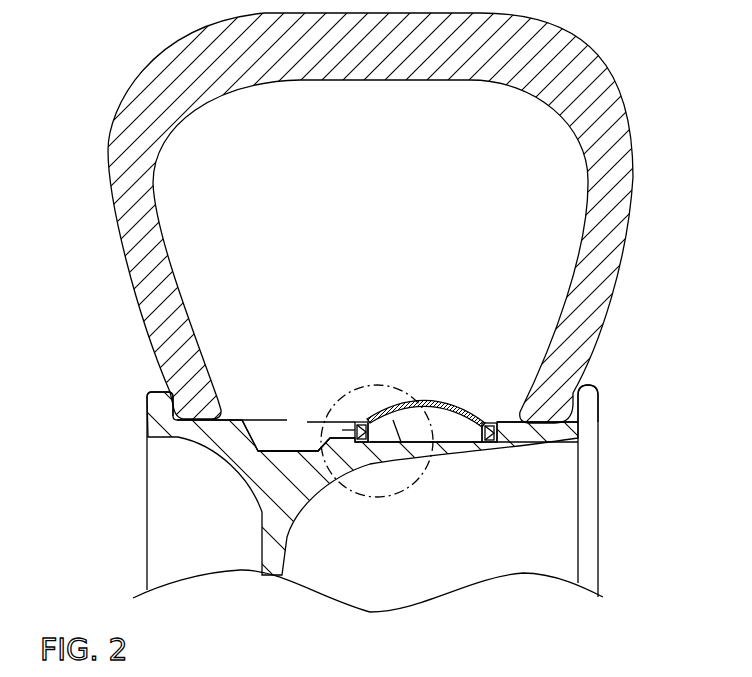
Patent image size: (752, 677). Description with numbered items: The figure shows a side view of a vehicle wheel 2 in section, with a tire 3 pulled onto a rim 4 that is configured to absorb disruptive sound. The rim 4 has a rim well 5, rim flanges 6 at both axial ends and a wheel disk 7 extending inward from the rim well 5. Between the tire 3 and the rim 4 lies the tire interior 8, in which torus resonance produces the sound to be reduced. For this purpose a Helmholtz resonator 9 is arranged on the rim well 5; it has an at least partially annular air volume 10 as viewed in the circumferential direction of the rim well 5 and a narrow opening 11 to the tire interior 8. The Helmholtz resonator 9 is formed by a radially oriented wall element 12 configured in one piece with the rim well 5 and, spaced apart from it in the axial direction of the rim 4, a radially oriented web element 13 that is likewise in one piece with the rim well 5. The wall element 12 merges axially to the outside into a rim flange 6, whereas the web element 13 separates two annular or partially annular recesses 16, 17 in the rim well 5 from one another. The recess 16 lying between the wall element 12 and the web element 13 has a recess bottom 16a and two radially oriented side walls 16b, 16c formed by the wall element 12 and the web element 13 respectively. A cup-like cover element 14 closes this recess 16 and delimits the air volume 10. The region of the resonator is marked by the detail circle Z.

The vehicle wheel 2 is at (644, 57).
The tire 3 is at (127, 188).
The rim 4 is at (600, 490).
The rim well 5 is at (509, 419).
The rim flange 6 is at (153, 400).
The wheel disk 7 is at (268, 536).
The tire interior 8 is at (364, 160).
The Helmholtz resonator 9 is at (443, 407).
The air volume 10 is at (467, 438).
The opening 11 is at (364, 421).
The wall element 12 is at (509, 433).
The web element 13 is at (332, 451).
The cover element 14 is at (437, 401).
The recess 16 is at (443, 431).
The recess bottom 16a is at (401, 442).
The side wall 16b is at (495, 446).
The side wall 16c is at (340, 475).
The recess 17 is at (266, 437).
The detail region Z is at (346, 396).